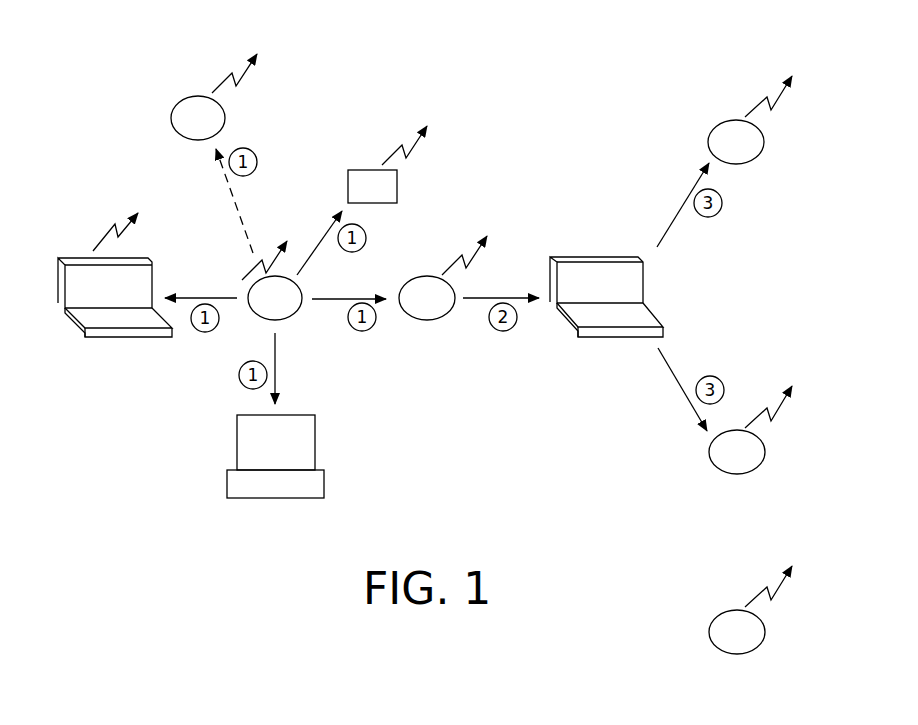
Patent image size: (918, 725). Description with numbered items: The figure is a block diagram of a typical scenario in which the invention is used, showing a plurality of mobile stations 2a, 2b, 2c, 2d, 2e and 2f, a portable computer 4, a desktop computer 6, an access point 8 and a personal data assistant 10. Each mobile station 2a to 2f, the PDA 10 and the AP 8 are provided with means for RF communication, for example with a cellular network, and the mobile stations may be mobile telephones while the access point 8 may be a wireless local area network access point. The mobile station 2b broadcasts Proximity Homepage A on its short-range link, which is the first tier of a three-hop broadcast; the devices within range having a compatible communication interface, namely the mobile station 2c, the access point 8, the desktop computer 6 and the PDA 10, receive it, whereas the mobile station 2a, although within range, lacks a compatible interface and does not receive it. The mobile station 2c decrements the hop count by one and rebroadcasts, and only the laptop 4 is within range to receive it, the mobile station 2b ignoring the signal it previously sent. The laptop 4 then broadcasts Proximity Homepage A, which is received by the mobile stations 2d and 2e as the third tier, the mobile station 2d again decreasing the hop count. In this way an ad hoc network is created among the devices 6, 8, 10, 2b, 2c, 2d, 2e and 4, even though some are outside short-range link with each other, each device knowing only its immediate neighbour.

The mobile station 2a is at (171, 118).
The mobile station 2b is at (297, 312).
The mobile station 2c is at (428, 320).
The mobile station 2d is at (708, 143).
The mobile station 2e is at (709, 452).
The mobile station 2f is at (709, 633).
The portable computer 4 is at (595, 338).
The desktop computer 6 is at (243, 498).
The access point 8 is at (397, 182).
The personal data assistant 10 is at (110, 340).